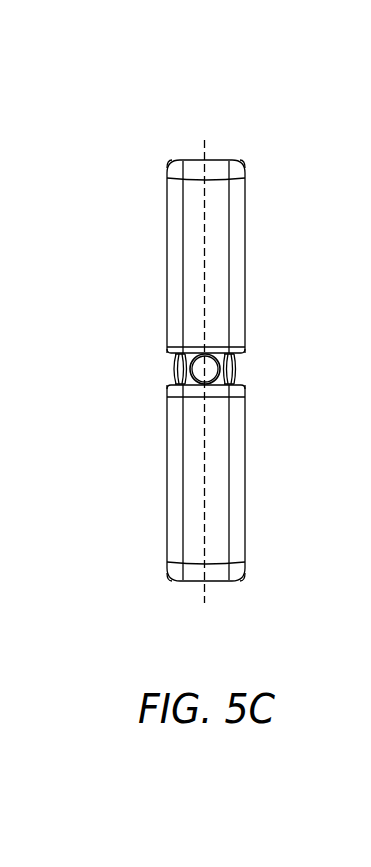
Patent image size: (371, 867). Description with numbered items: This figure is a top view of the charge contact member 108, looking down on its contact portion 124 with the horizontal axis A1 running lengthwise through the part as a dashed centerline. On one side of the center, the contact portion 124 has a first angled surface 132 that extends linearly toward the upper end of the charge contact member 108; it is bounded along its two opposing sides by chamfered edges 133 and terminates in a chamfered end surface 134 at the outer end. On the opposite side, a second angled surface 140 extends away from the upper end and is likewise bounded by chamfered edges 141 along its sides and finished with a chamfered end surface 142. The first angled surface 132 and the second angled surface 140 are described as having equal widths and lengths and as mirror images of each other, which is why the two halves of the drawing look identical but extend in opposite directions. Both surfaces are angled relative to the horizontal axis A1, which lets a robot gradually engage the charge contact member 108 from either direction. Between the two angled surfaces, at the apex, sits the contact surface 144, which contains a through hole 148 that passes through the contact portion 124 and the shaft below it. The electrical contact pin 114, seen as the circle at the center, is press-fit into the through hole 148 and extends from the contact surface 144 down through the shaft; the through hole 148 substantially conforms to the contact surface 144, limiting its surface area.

The charge contact member 108 is at (221, 113).
The contact portion 124 is at (268, 293).
The first angled surface 132 is at (186, 238).
The chamfered edges 133 is at (174, 278).
The chamfered end surface 134 is at (193, 168).
The electrical contact pin 114 is at (200, 364).
The through hole 148 is at (224, 369).
The contact surface 144 is at (143, 373).
The second angled surface 140 is at (188, 477).
The chamfered edges 141 is at (173, 522).
The chamfered end surface 142 is at (215, 570).
The horizontal axis A1 is at (203, 590).